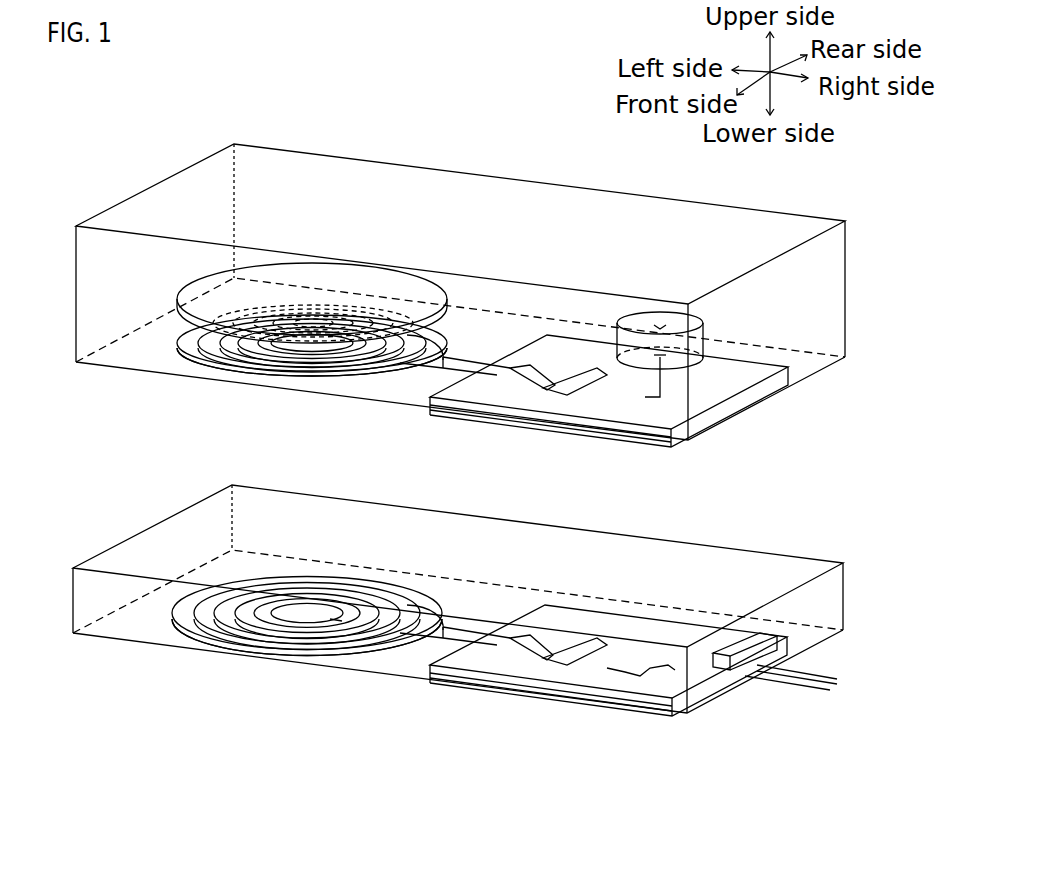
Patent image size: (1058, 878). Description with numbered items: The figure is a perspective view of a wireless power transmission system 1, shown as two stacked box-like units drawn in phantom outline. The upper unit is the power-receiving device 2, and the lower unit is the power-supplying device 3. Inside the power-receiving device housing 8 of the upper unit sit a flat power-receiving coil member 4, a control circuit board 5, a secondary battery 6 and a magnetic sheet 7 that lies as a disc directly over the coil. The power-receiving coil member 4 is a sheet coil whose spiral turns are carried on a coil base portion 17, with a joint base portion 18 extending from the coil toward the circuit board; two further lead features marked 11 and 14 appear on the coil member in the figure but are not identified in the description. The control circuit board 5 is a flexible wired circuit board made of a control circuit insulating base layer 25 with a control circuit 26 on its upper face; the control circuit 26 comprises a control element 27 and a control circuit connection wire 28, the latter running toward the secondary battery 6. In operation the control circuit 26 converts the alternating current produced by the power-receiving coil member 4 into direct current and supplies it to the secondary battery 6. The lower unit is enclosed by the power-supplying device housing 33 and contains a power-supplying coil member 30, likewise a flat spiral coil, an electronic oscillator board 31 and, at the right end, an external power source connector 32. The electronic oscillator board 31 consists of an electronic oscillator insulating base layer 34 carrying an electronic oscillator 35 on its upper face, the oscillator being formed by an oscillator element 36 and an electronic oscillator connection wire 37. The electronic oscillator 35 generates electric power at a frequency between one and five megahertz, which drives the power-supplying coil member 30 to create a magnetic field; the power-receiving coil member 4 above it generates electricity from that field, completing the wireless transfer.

The wireless power transmission system 1 is at (423, 834).
The power-receiving device 2 is at (464, 415).
The power-supplying device 3 is at (498, 604).
The power-receiving coil member 4 is at (218, 377).
The control circuit board 5 is at (550, 418).
The secondary battery 6 is at (705, 327).
The magnetic sheet 7 is at (190, 287).
The power-receiving device housing 8 is at (847, 290).
The first lead wire 11 is at (363, 360).
The second lead wire 14 is at (423, 365).
The coil base portion 17 is at (280, 383).
The joint base portion 18 is at (423, 375).
The control circuit insulating base layer 25 is at (592, 428).
The control circuit 26 is at (517, 380).
The control element 27 is at (587, 385).
The control circuit connection wire 28 is at (645, 402).
The power-supplying coil member 30 is at (210, 652).
The electronic oscillator board 31 is at (547, 697).
The external power source connector 32 is at (727, 680).
The power-supplying device housing 33 is at (846, 592).
The electronic oscillator insulating base layer 34 is at (595, 700).
The electronic oscillator 35 is at (510, 657).
The oscillator element 36 is at (598, 668).
The electronic oscillator connection wire 37 is at (647, 685).